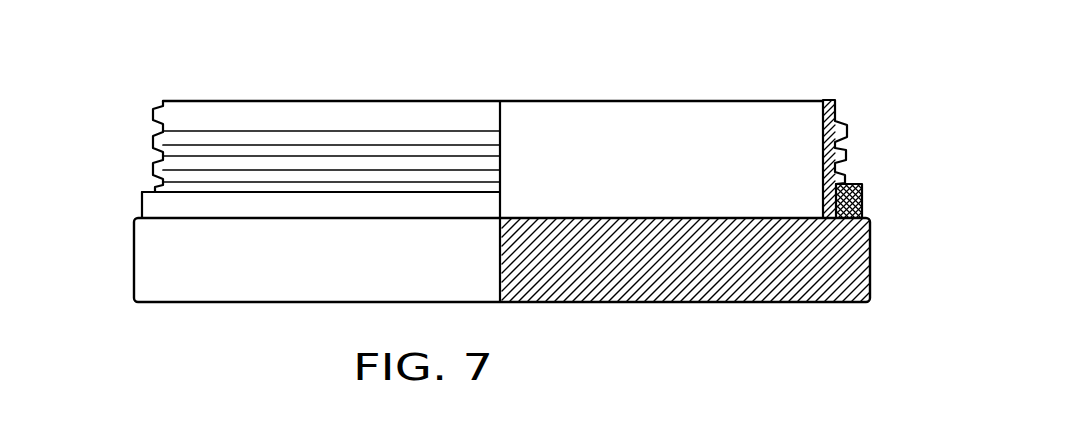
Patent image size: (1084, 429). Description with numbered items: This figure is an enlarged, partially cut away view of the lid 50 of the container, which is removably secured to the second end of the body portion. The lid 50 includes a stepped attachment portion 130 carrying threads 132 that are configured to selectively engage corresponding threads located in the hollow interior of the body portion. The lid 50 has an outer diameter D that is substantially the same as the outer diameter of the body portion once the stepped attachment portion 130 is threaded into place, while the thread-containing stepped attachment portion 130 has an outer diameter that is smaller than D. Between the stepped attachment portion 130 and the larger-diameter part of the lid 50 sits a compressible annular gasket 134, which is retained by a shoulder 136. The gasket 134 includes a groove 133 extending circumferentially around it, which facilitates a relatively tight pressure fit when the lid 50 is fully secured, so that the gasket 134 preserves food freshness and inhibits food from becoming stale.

The lid 50 is at (208, 280).
The stepped attachment portion 130 is at (249, 122).
The threads 132 is at (148, 143).
The compressible annular gasket 134 is at (150, 201).
The shoulder 136 is at (847, 181).
The groove 133 is at (848, 184).
The outer diameter D is at (872, 262).